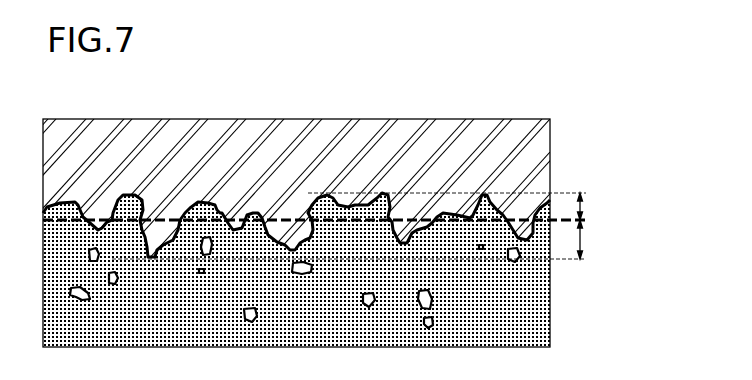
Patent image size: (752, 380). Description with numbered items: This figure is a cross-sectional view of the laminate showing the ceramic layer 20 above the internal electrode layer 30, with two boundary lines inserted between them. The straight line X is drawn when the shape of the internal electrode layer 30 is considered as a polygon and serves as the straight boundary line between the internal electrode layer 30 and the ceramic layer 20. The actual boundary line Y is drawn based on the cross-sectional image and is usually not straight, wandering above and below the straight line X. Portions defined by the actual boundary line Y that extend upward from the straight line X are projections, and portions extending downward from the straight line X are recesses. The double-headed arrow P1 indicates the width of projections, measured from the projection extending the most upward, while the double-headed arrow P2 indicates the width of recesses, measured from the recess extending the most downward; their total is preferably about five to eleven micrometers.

The ceramic layer 20 is at (535, 162).
The internal electrode layer 30 is at (535, 295).
The straight line X is at (163, 220).
The actual boundary line Y is at (203, 212).
The double-headed arrow indicating width of projections P1 is at (331, 208).
The double-headed arrow indicating width of recesses P2 is at (366, 239).